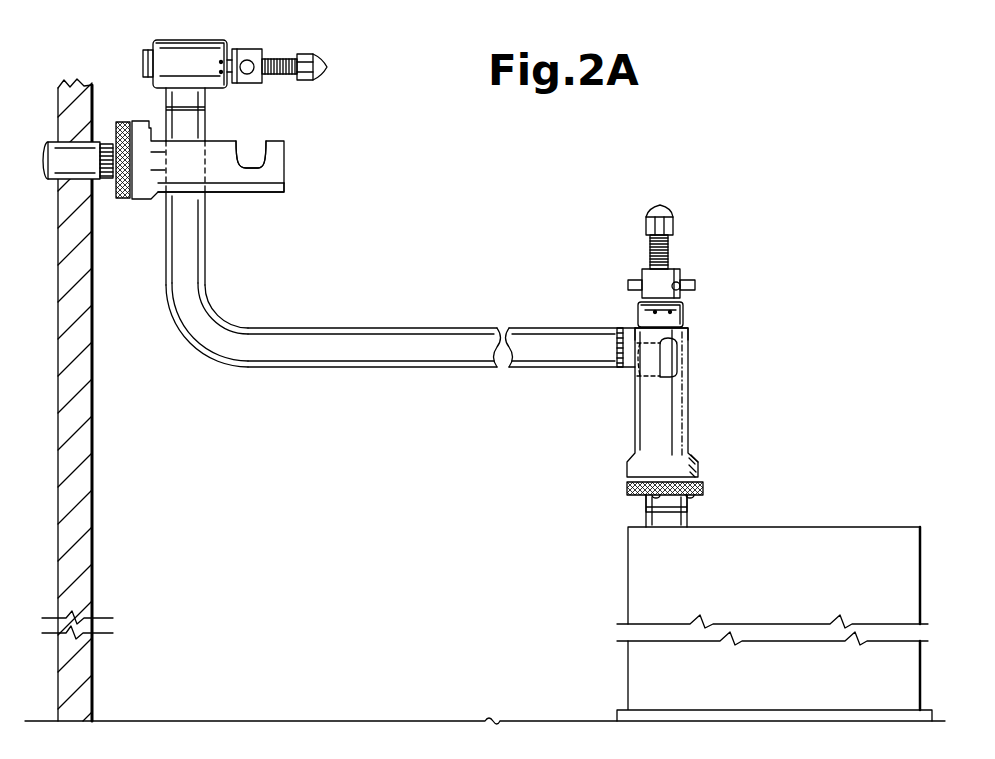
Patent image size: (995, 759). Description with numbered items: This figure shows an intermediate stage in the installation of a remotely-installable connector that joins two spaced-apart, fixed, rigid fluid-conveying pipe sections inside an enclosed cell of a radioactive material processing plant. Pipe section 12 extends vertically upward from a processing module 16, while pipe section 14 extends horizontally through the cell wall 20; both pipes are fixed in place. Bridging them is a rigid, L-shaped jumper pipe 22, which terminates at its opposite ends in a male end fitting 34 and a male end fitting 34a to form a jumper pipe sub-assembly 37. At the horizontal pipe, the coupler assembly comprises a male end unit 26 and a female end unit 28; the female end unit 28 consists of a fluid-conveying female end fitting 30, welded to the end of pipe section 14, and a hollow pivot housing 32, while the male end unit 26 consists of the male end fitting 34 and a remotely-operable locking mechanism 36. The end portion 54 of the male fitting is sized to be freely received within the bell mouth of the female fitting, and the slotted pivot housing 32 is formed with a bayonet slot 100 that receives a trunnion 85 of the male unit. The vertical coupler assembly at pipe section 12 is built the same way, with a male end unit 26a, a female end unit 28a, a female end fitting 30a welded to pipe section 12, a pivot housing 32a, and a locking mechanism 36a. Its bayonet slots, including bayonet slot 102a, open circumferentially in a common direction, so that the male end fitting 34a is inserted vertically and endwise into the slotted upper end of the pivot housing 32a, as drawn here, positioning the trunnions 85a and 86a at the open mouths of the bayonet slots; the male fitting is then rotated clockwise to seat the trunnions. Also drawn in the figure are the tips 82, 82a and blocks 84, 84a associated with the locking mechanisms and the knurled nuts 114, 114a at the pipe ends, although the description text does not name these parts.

The pipe section 12 is at (688, 515).
The pipe section 14 is at (60, 152).
The processing module 16 is at (781, 579).
The cell wall 20 is at (93, 460).
The jumper pipe 22 is at (400, 308).
The male end unit 26 is at (183, 70).
The male end unit 26a is at (691, 310).
The female end unit 28 is at (220, 176).
The female end unit 28a is at (656, 394).
The female end fitting 30 is at (109, 182).
The female end fitting 30a is at (648, 500).
The pivot housing 32 is at (268, 193).
The pivot housing 32a is at (634, 398).
The male end fitting 34 is at (168, 39).
The male end fitting 34a is at (689, 323).
The locking mechanism 36 is at (319, 63).
The locking mechanism 36a is at (671, 230).
The jumper pipe sub-assembly 37 is at (266, 371).
The end portion of male fitting 54 is at (143, 70).
The screw tip 82 is at (314, 74).
The screw cap 82a is at (650, 215).
The clamp block 84 is at (259, 83).
The clamp block 84a is at (678, 276).
The trunnion 85 is at (251, 60).
The trunnion 85a is at (696, 285).
The trunnion 86a is at (630, 284).
The bayonet slot 100 is at (247, 167).
The bayonet slot 102a is at (678, 364).
The knurled nut 114 is at (122, 124).
The knurled nut 114a is at (704, 488).